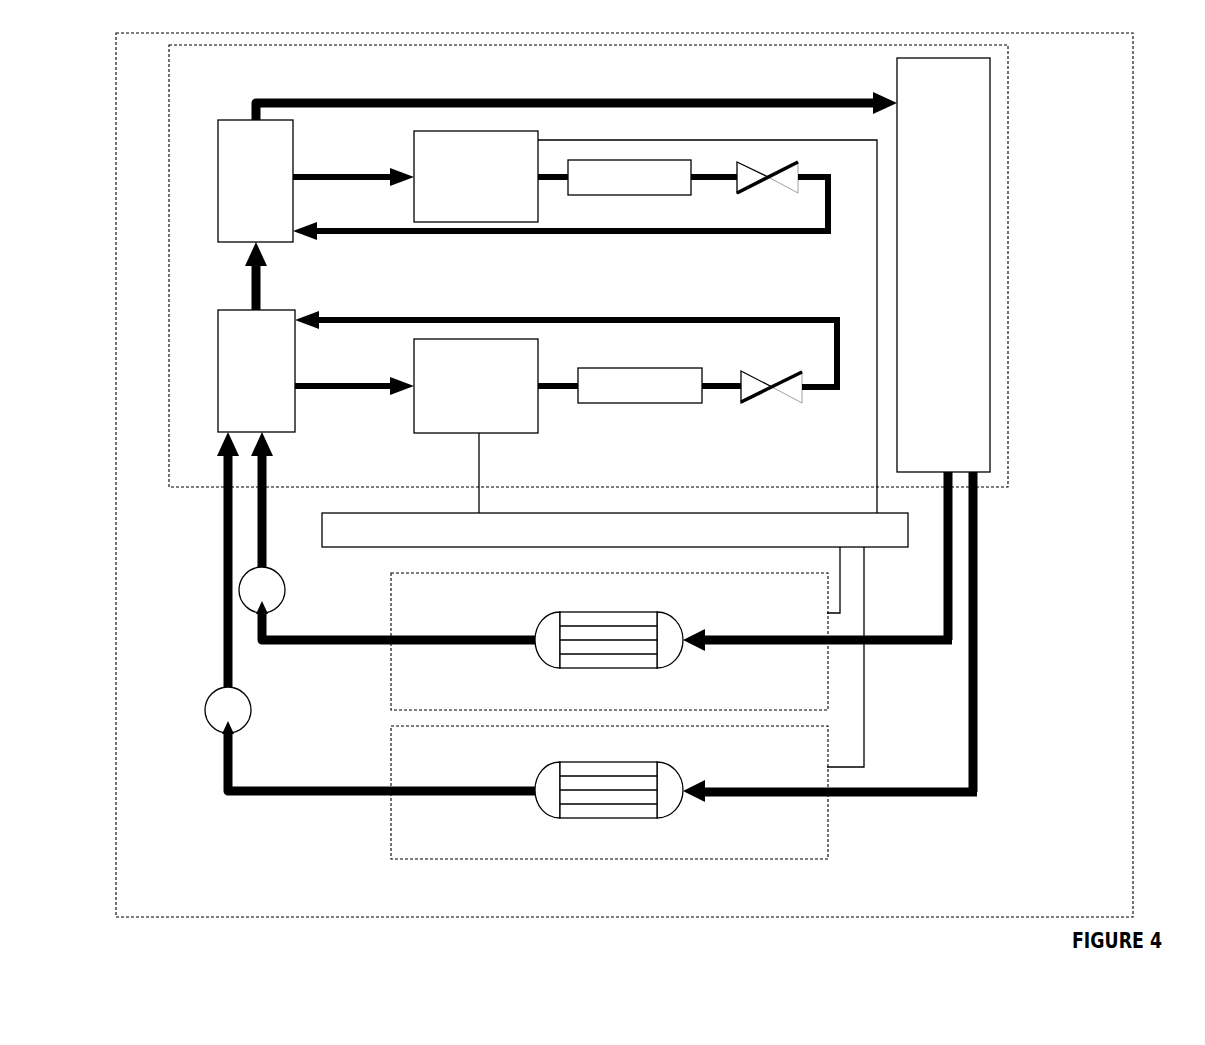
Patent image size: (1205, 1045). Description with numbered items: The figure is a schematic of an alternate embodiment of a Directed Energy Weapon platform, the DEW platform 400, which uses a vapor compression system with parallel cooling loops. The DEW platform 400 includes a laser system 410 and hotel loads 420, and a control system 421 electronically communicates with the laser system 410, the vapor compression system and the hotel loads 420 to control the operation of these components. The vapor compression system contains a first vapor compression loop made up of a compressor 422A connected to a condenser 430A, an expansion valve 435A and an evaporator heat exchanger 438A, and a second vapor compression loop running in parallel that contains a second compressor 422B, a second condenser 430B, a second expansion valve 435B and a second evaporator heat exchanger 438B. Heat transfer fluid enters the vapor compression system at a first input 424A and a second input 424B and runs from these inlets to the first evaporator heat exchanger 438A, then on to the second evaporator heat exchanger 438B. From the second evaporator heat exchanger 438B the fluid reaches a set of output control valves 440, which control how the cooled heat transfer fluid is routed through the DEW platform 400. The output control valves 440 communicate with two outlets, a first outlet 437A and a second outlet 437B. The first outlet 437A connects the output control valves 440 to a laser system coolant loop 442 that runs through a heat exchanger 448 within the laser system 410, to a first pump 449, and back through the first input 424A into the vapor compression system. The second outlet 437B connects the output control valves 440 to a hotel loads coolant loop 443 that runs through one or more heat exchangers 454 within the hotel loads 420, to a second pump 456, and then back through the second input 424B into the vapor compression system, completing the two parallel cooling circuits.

The DEW platform 400 is at (1113, 154).
The laser system 410 is at (400, 697).
The hotel loads 420 is at (813, 850).
The control system 421 is at (727, 520).
The compressor 422A is at (528, 351).
The second compressor 422B is at (528, 137).
The first input 424A is at (267, 487).
The second input 424B is at (223, 488).
The condenser 430A is at (623, 372).
The second condenser 430B is at (633, 190).
The expansion valve 435A is at (752, 382).
The second expansion valve 435B is at (787, 165).
The first outlet 437A is at (948, 472).
The second outlet 437B is at (980, 520).
The evaporator heat exchanger 438A is at (228, 320).
The second evaporator heat exchanger 438B is at (228, 125).
The output control valves 440 is at (978, 101).
The laser system coolant loop 442 is at (908, 645).
The hotel loads coolant loop 443 is at (960, 798).
The heat exchanger 448 is at (665, 623).
The first pump 449 is at (263, 575).
The heat exchangers 454 is at (667, 773).
The second pump 456 is at (222, 712).